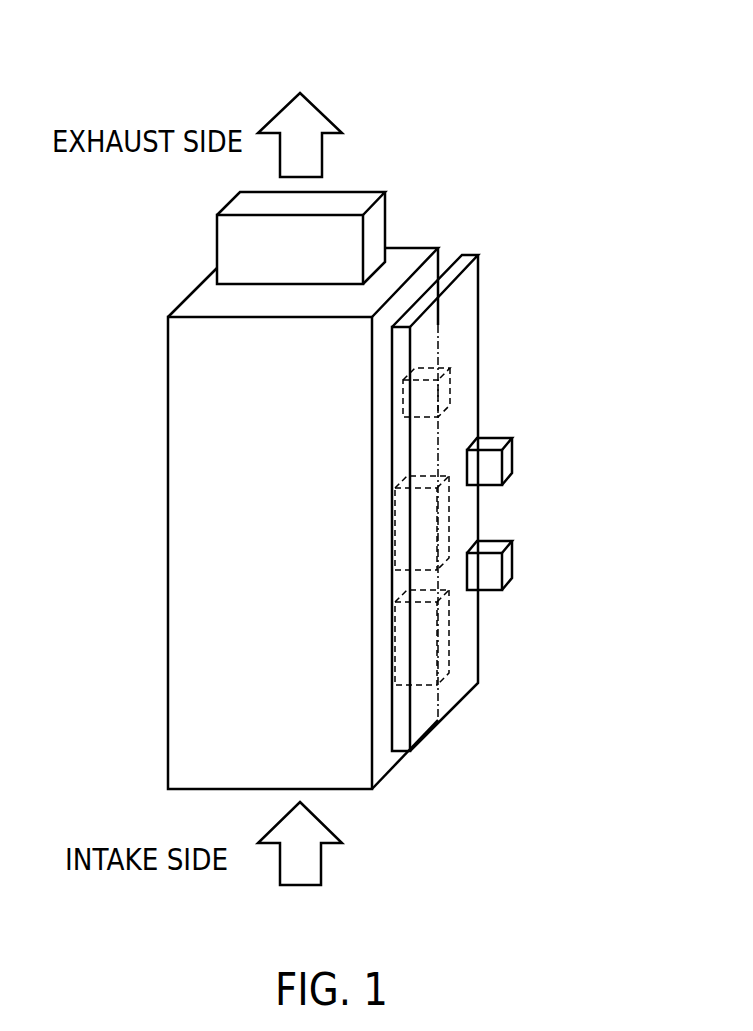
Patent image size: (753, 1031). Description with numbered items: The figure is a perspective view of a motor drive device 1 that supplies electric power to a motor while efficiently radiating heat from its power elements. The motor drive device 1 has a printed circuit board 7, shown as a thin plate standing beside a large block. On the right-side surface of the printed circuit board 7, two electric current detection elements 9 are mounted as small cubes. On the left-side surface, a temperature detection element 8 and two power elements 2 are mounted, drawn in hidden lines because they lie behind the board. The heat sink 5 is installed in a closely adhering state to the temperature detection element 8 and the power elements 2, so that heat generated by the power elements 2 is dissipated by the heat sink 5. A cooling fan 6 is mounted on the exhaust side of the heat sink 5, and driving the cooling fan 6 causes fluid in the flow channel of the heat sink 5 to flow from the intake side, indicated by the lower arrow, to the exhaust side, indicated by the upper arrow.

The motor drive device 1 is at (592, 108).
The power element 2 is at (448, 560).
The heat sink 5 is at (182, 457).
The cooling fan 6 is at (378, 227).
The printed circuit board 7 is at (475, 285).
The temperature detection element 8 is at (450, 387).
The electric current detection element 9 is at (508, 563).